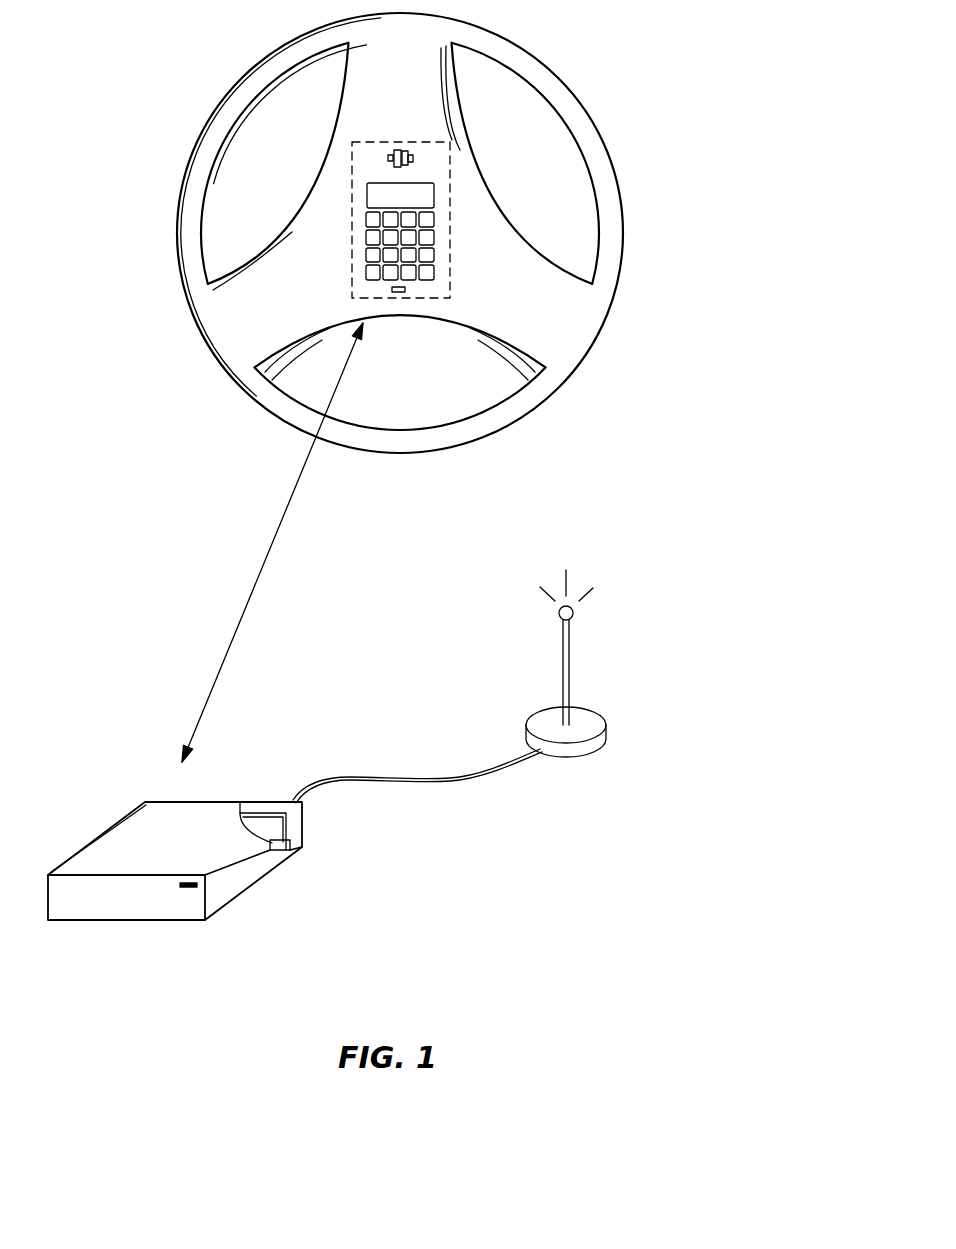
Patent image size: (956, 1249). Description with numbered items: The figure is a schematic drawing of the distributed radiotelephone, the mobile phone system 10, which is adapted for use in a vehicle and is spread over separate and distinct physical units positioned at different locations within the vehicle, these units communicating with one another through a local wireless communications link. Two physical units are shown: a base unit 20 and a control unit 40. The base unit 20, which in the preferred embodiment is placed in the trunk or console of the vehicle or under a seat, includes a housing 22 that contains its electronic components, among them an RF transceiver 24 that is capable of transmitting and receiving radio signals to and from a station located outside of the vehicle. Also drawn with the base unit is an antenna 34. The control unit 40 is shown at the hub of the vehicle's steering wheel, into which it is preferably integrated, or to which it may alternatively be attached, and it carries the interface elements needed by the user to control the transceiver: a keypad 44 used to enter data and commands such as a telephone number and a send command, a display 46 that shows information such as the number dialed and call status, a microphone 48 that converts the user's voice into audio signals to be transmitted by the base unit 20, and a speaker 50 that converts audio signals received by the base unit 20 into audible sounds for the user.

The mobile phone system 10 is at (715, 440).
The base unit 20 is at (103, 827).
The housing 22 is at (122, 920).
The RF transceiver 24 is at (250, 813).
The antenna 34 is at (572, 652).
The control unit 40 is at (450, 197).
The keypad 44 is at (368, 250).
The display 46 is at (378, 187).
The microphone 48 is at (398, 293).
The speaker 50 is at (407, 147).